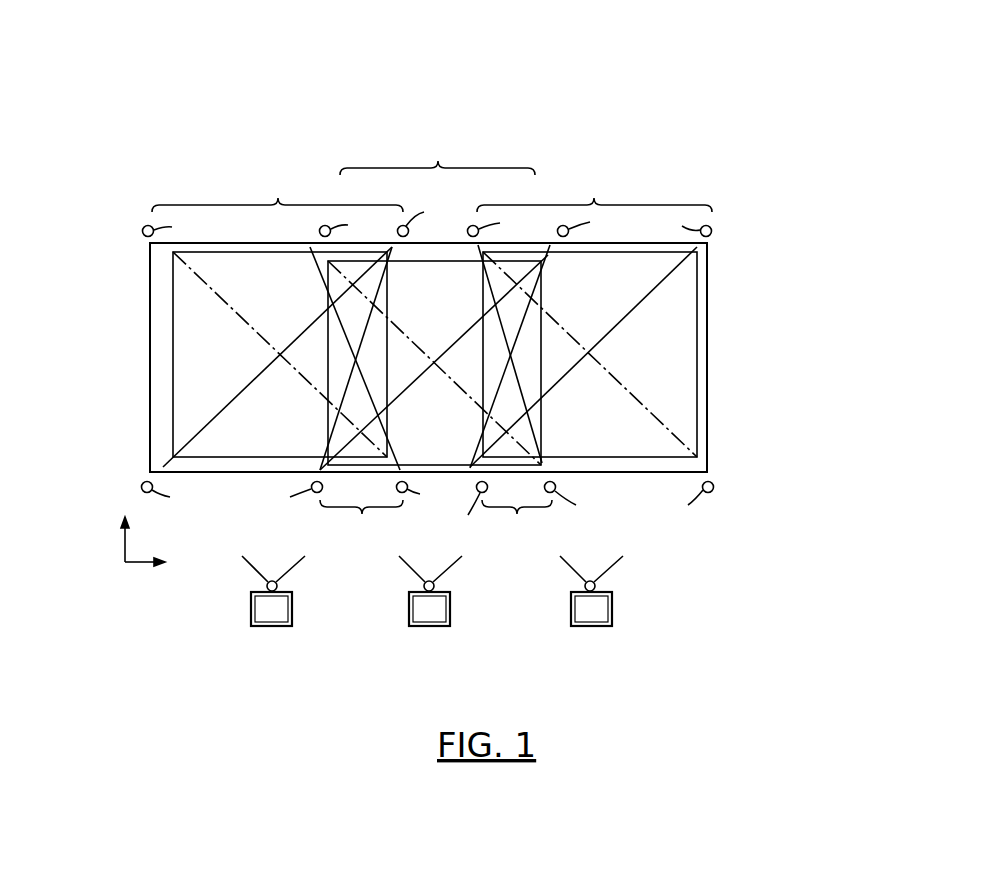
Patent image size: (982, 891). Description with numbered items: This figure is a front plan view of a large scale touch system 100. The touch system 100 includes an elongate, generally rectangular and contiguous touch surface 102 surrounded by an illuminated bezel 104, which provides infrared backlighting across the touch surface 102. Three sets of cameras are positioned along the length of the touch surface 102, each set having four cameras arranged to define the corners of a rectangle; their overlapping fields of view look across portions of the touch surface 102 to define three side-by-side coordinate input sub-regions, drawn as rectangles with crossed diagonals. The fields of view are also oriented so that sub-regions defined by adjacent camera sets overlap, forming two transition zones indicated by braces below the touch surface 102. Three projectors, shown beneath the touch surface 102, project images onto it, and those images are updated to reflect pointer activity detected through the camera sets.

The touch system 100 is at (578, 100).
The touch surface 102 is at (148, 284).
The illuminated bezel 104 is at (711, 299).